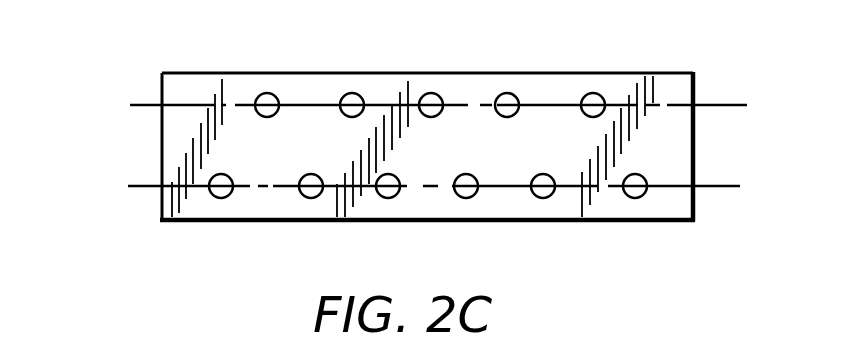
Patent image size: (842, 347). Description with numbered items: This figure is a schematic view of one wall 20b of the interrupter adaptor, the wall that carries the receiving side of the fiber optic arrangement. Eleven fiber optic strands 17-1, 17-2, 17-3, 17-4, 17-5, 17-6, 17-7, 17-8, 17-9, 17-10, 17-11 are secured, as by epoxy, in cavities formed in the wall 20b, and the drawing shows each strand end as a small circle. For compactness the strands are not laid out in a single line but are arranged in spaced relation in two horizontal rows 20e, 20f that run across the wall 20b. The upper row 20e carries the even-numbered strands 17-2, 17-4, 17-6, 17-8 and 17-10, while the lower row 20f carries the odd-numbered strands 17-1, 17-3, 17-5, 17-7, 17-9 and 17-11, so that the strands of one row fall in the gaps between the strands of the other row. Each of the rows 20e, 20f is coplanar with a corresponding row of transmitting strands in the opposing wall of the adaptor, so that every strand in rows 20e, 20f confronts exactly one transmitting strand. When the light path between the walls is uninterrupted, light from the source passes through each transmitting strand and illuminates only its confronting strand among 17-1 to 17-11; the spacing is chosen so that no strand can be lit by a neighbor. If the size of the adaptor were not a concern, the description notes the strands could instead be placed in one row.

The wall 20b is at (181, 72).
The horizontal row 20e is at (398, 105).
The horizontal row 20f is at (395, 182).
The fiber optic strand 17-1 is at (222, 198).
The fiber optic strand 17-2 is at (267, 93).
The fiber optic strand 17-3 is at (312, 198).
The fiber optic strand 17-4 is at (352, 93).
The fiber optic strand 17-5 is at (392, 197).
The fiber optic strand 17-6 is at (431, 93).
The fiber optic strand 17-7 is at (466, 198).
The fiber optic strand 17-8 is at (508, 93).
The fiber optic strand 17-9 is at (543, 198).
The fiber optic strand 17-10 is at (598, 93).
The fiber optic strand 17-11 is at (640, 197).